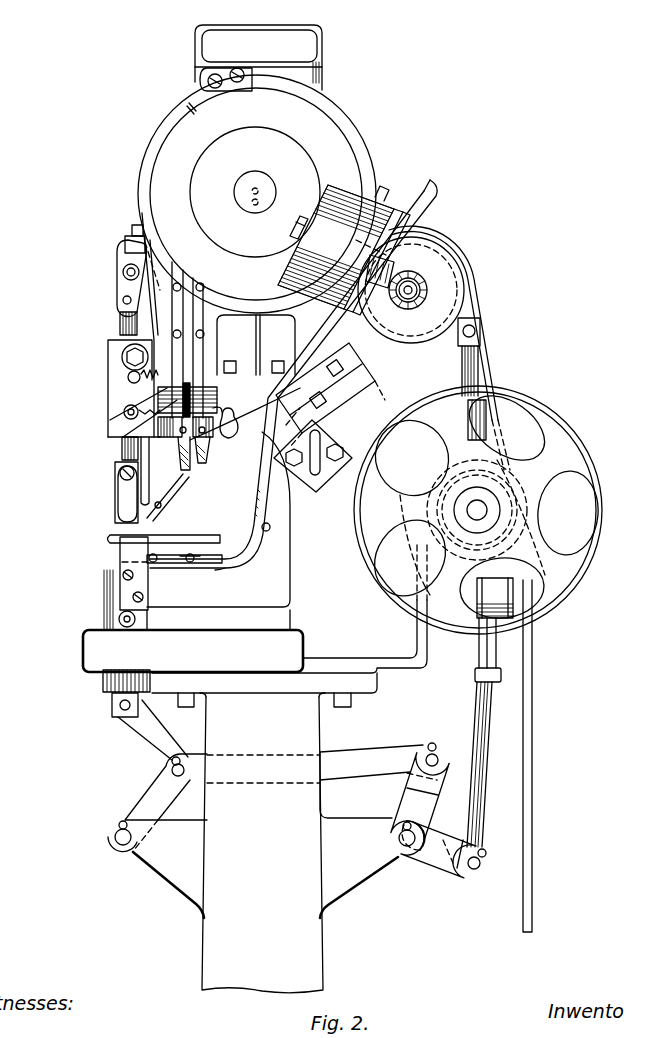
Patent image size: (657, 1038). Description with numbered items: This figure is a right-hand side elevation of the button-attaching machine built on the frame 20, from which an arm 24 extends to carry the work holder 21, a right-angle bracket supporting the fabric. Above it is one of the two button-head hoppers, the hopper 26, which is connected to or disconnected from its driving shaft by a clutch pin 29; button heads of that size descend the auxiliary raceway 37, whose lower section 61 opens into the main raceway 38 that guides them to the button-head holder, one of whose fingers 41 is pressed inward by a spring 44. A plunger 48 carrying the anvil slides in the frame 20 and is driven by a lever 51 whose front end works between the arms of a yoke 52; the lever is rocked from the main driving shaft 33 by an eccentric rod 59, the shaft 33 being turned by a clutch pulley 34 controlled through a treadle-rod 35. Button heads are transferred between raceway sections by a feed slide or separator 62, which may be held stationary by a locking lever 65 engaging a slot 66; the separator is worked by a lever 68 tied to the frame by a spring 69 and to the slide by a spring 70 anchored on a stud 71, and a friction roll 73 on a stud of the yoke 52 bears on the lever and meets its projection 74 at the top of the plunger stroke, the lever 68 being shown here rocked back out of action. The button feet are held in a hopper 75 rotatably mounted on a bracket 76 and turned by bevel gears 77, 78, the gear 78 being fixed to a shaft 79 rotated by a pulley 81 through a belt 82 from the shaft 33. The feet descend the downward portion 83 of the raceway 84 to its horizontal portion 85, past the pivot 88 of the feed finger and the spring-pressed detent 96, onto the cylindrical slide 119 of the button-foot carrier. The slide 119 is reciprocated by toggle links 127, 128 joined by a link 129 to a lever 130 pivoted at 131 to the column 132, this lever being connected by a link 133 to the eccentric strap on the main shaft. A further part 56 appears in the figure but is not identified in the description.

The frame 20 is at (400, 663).
The holder for the work or fabric 21 is at (127, 539).
The arm 24 is at (222, 598).
The hopper 26 is at (186, 165).
The clutch pin 29 is at (257, 183).
The main driving shaft 33 is at (478, 511).
The clutch pulley 34 is at (562, 439).
The treadle-rod 35 is at (532, 713).
The auxiliary raceway 37 is at (190, 318).
The main raceway 38 is at (170, 502).
The finger 41 is at (125, 515).
The spring 44 is at (115, 492).
The plunger 48 is at (120, 453).
The lever 51 is at (118, 270).
The yoke 52 is at (116, 297).
The block 56 is at (256, 345).
The eccentric rod 59 is at (466, 365).
The lower section 61 is at (196, 456).
The feed slide or separator 62 is at (236, 418).
The locking lever 65 is at (157, 390).
The slot 66 is at (181, 440).
The lever 68 is at (143, 327).
The spring 69 is at (127, 377).
The spring 70 is at (140, 428).
The stud 71 is at (124, 413).
The friction roll 73 is at (134, 228).
The forwardly extending projection 74 is at (124, 252).
The hopper 75 is at (352, 205).
The bracket 76 is at (350, 370).
The bevel gear 77 is at (414, 272).
The bevel gear 78 is at (428, 278).
The shaft 79 is at (409, 297).
The pulley 81 is at (458, 289).
The belt 82 is at (488, 372).
The downwardly extended portion 83 is at (258, 468).
The raceway 84 is at (179, 538).
The horizontal portion 85 is at (156, 562).
The pivot 88 is at (272, 527).
The detent 96 is at (191, 562).
The slide 119 is at (110, 708).
The toggle link 127 is at (148, 740).
The toggle link 128 is at (150, 800).
The link 129 is at (365, 772).
The lever 130 is at (428, 862).
The pivot 131 is at (396, 841).
The column 132 is at (213, 942).
The link 133 is at (482, 778).